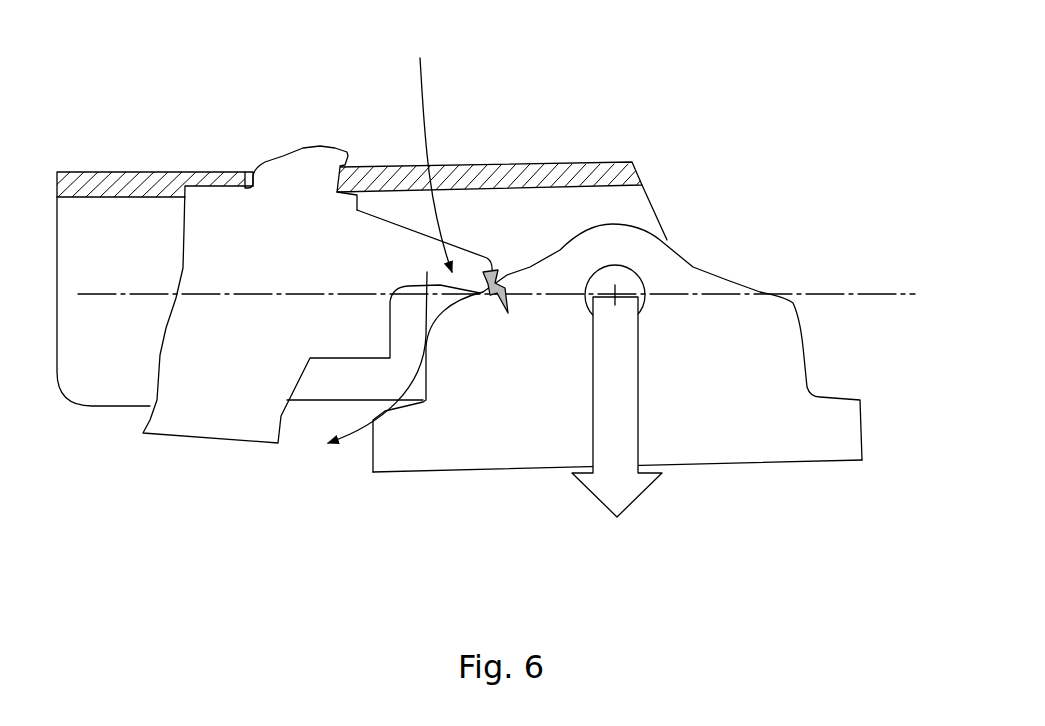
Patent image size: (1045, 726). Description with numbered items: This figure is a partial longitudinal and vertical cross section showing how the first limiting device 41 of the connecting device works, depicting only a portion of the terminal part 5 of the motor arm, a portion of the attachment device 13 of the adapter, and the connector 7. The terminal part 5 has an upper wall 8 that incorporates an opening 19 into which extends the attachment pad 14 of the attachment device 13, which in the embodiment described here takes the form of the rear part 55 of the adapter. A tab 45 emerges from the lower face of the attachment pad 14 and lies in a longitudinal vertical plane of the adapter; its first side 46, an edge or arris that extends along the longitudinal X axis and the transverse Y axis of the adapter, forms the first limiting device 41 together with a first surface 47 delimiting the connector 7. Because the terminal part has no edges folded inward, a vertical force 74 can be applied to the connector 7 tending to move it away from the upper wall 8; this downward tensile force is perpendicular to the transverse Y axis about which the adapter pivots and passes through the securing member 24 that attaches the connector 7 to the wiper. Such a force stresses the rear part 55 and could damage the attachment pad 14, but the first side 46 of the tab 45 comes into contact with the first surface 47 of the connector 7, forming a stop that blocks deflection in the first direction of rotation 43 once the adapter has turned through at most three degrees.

The upper wall 8 is at (100, 185).
The opening 19 is at (244, 183).
The attachment pad 14 is at (282, 157).
The attachment device 13 is at (317, 392).
The rear part 55 is at (214, 456).
The first limiting device 41 is at (430, 152).
The first side 46 is at (486, 283).
The terminal part 5 is at (595, 156).
The transverse Y axis y is at (620, 292).
The longitudinal X axis X is at (850, 293).
The connector 7 is at (818, 351).
The tab 45 is at (356, 277).
The first direction of rotation 43 is at (360, 417).
The first surface 47 is at (503, 313).
The vertical force 74 is at (628, 505).
The securing member 24 is at (765, 465).